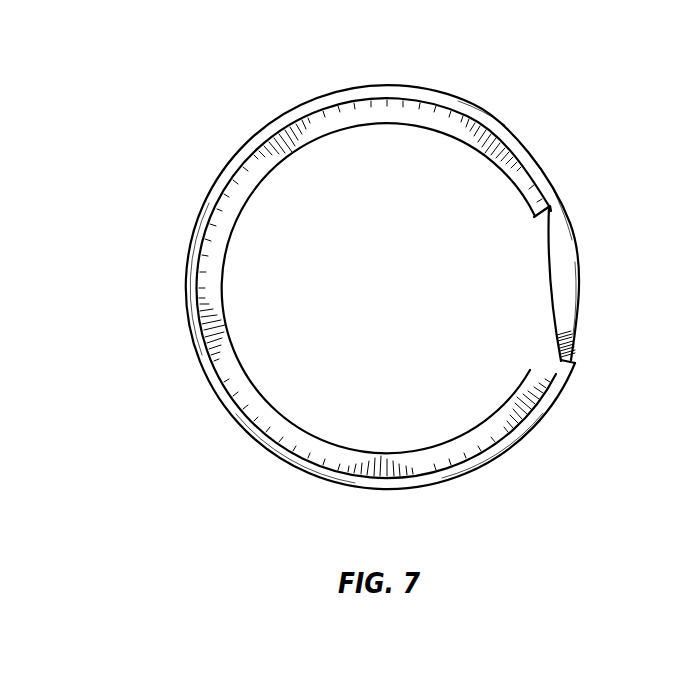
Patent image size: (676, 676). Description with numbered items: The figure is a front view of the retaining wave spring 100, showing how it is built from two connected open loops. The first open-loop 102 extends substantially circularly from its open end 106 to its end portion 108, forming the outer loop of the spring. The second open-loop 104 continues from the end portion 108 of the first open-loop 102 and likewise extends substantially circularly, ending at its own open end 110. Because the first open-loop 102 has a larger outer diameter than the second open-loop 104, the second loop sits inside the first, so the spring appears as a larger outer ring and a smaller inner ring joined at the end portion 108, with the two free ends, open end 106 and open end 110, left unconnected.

The retaining wave spring 100 is at (337, 246).
The first open-loop 102 is at (535, 437).
The second open-loop 104 is at (266, 130).
The open end 106 is at (576, 362).
The end portion 108 is at (556, 334).
The open end 110 is at (532, 218).